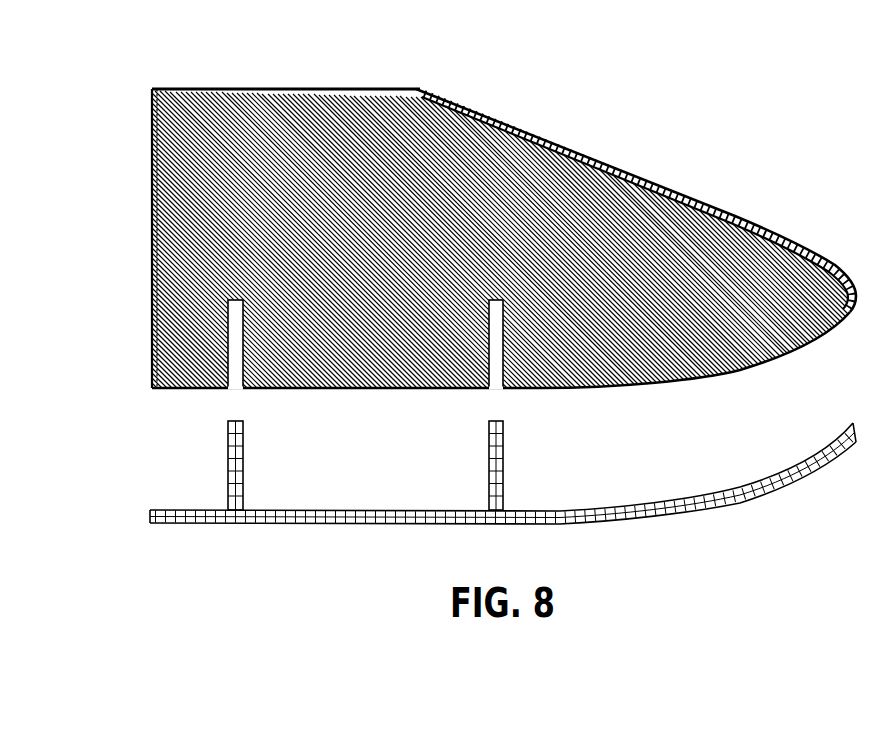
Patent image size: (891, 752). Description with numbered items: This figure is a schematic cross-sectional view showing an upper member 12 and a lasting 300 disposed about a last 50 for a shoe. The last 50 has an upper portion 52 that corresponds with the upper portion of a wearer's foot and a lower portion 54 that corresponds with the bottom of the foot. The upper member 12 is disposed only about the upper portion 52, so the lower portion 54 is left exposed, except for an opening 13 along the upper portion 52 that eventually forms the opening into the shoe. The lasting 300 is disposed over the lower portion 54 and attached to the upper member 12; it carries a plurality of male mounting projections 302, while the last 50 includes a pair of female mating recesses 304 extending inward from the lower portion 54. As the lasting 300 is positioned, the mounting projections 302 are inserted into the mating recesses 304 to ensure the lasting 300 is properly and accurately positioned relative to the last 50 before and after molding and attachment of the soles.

The opening 13 is at (504, 230).
The last 50 is at (317, 88).
The upper member 12 is at (636, 200).
The upper portion 52 is at (678, 192).
The lower portion 54 is at (642, 393).
The female mating recesses 304 is at (243, 340).
The lasting 300 is at (722, 505).
The male mounting projections 302 is at (244, 461).